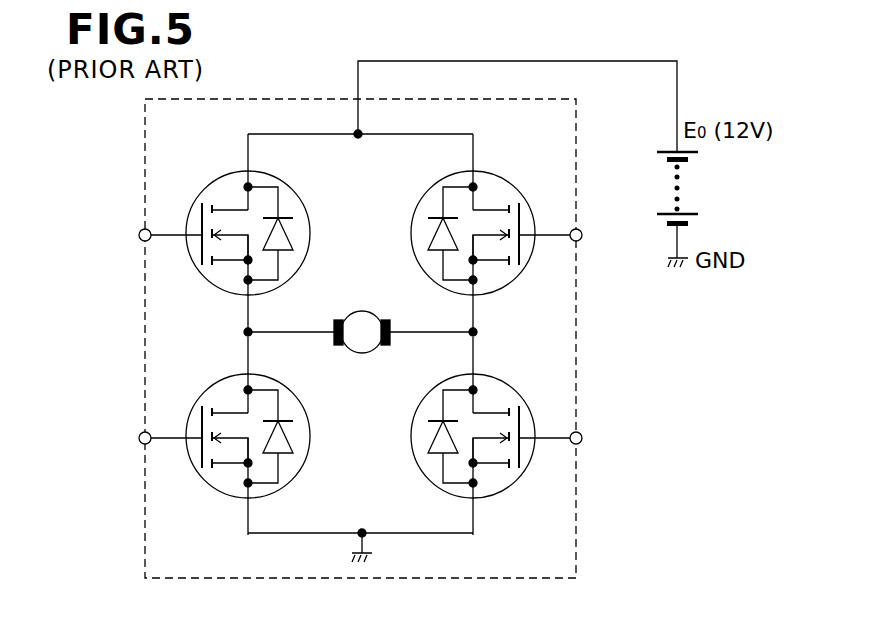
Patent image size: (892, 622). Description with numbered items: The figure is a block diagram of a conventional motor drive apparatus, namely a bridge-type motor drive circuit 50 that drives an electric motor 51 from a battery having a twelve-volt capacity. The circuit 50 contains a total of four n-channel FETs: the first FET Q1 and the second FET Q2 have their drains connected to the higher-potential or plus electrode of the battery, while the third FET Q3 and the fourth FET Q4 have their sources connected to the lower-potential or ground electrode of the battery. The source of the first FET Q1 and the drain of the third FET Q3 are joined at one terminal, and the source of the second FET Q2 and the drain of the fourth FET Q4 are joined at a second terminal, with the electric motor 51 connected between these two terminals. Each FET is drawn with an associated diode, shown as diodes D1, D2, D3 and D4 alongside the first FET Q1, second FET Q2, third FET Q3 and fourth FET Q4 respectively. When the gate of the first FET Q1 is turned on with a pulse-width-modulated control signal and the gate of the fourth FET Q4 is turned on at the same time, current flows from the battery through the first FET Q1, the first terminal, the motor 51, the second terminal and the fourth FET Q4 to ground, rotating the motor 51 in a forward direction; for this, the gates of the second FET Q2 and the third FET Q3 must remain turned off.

The bridge-type motor drive circuit 50 is at (297, 93).
The electric motor 51 is at (362, 310).
The first FET Q1 is at (224, 233).
The second FET Q2 is at (496, 233).
The third FET Q3 is at (224, 436).
The fourth FET Q4 is at (496, 436).
The diode D1 is at (293, 228).
The diode D2 is at (436, 228).
The diode D3 is at (294, 441).
The diode D4 is at (431, 440).